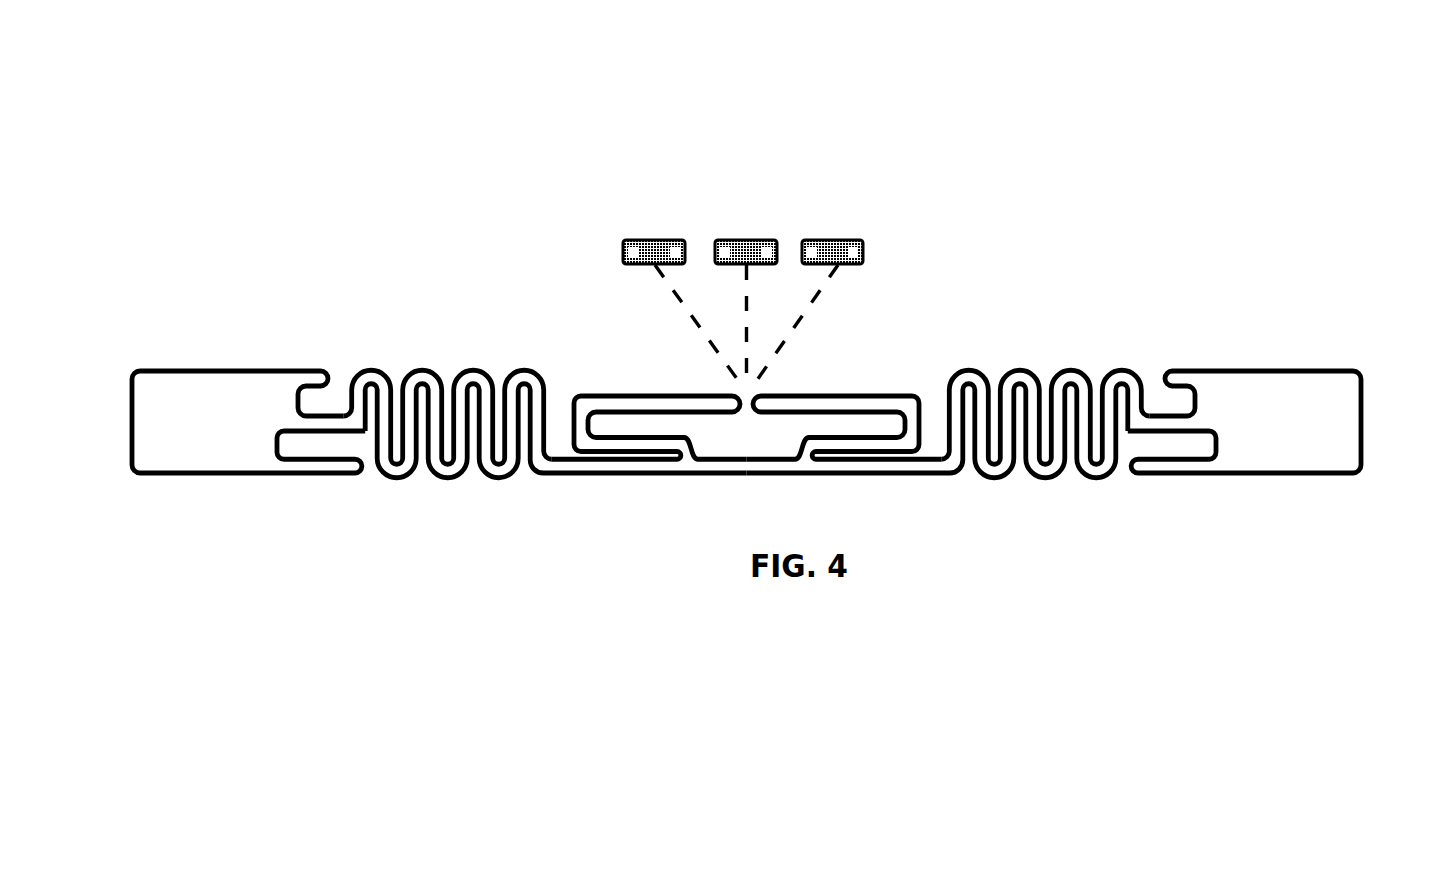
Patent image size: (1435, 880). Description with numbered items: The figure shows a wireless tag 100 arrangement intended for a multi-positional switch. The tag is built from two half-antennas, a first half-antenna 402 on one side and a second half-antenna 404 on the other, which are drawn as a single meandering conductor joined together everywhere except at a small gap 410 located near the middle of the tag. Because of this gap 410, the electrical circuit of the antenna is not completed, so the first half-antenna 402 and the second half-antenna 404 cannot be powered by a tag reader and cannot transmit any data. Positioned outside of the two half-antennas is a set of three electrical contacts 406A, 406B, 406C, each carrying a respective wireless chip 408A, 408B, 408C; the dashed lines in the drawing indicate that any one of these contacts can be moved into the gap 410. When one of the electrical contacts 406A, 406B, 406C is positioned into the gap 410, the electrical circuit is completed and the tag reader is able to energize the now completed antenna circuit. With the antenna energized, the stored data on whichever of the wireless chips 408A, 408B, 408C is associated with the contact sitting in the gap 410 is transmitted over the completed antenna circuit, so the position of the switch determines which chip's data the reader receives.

The wireless tag 100 is at (430, 48).
The first half-antenna 402 is at (1371, 437).
The second half-antenna 404 is at (122, 437).
The electrical contact 406A is at (862, 242).
The electrical contact 406B is at (777, 242).
The electrical contact 406C is at (625, 241).
The wireless chip 408A is at (837, 265).
The wireless chip 408B is at (748, 241).
The wireless chip 408C is at (655, 240).
The gap 410 is at (747, 392).